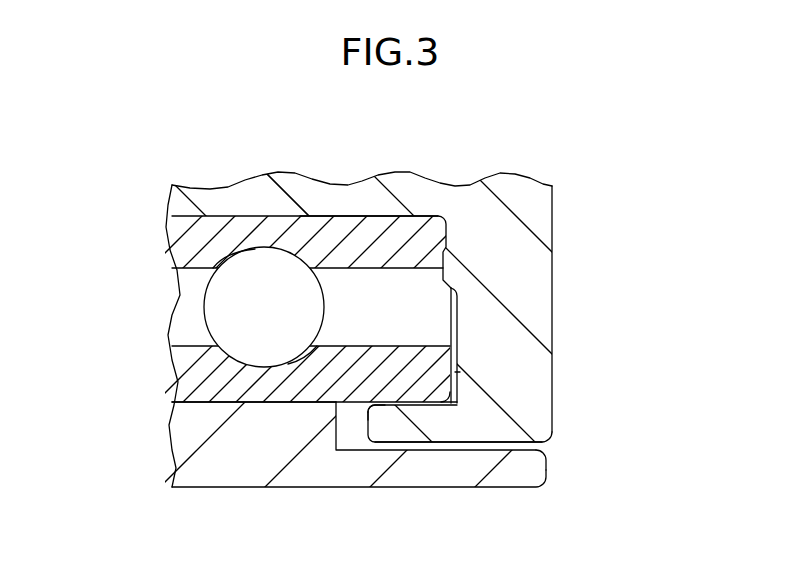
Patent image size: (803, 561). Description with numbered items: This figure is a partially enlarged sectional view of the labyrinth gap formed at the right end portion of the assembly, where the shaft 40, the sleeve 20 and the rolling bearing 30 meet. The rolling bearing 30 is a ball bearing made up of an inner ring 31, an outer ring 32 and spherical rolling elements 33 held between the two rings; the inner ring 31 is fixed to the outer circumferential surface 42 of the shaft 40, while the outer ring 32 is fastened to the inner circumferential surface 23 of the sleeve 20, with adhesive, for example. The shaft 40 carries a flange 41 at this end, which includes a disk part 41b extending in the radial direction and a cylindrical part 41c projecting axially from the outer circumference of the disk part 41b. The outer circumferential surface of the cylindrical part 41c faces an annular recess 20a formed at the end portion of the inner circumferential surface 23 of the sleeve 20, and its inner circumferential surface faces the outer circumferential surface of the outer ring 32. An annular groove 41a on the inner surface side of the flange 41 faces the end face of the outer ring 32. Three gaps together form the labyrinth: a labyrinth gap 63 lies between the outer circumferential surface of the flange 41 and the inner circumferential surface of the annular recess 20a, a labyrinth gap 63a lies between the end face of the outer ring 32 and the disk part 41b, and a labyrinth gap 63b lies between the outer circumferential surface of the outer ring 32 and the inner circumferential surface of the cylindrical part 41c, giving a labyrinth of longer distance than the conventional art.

The sleeve 20 is at (245, 487).
The annular recess 20a is at (480, 446).
The inner circumferential surface 23 is at (217, 397).
The rolling bearing 30 is at (327, 216).
The inner ring 31 is at (242, 226).
The outer ring 32 is at (195, 373).
The spherical rolling element 33 is at (206, 304).
The shaft 40 is at (553, 213).
The flange 41 is at (525, 272).
The annular groove 41a is at (458, 375).
The disk part 41b is at (553, 318).
The cylindrical part 41c is at (394, 428).
The outer circumferential surface 42 is at (378, 218).
The labyrinth gap 63 is at (513, 444).
The labyrinth gap 63a is at (458, 372).
The labyrinth gap 63b is at (367, 406).